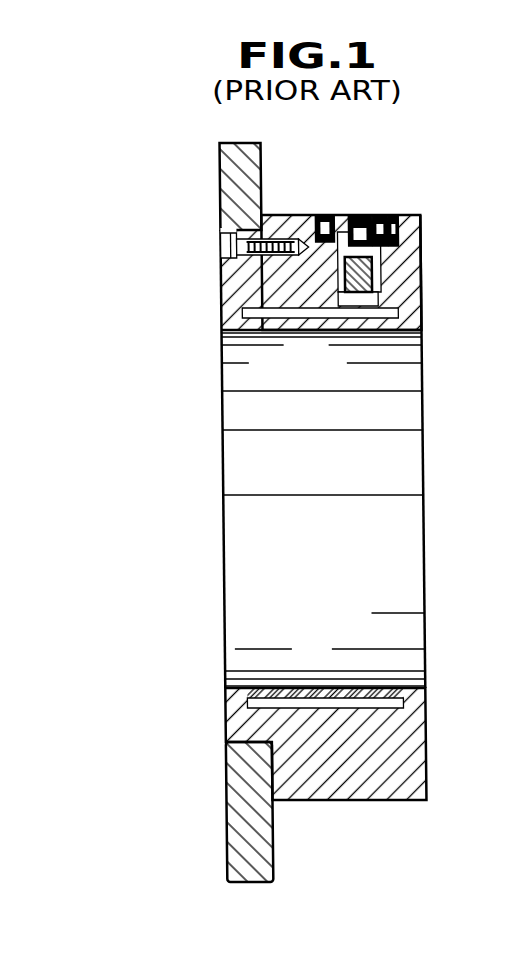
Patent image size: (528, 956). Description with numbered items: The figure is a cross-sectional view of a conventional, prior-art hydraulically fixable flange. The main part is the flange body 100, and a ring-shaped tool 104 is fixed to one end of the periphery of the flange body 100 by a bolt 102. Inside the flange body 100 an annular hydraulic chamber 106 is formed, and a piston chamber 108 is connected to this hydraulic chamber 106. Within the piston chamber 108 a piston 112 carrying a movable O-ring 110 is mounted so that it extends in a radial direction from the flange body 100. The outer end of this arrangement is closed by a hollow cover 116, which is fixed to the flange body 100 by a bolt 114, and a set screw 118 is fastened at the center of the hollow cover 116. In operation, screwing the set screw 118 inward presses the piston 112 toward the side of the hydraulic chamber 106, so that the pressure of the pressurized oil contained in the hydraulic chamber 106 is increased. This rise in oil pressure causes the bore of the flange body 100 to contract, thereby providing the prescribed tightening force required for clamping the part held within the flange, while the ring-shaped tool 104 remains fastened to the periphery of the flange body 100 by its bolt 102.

The flange body 100 is at (286, 214).
The bolt 102 is at (226, 245).
The ring-shaped tool 104 is at (218, 162).
The annular hydraulic chamber 106 is at (276, 331).
The piston chamber 108 is at (365, 301).
The movable O-ring 110 is at (369, 273).
The piston 112 is at (377, 287).
The bolt 114 is at (325, 214).
The hollow cover 116 is at (375, 214).
The set screw 118 is at (350, 214).